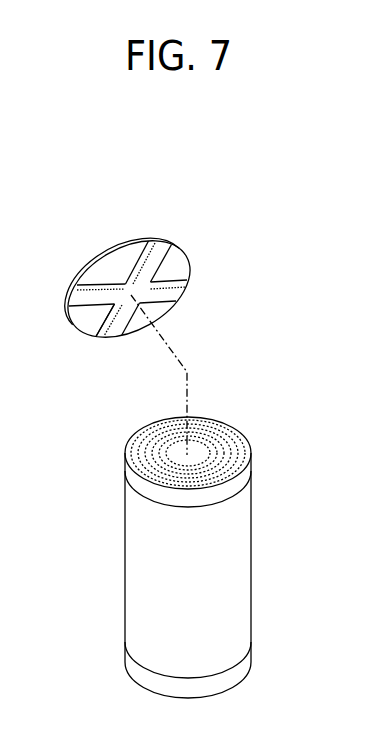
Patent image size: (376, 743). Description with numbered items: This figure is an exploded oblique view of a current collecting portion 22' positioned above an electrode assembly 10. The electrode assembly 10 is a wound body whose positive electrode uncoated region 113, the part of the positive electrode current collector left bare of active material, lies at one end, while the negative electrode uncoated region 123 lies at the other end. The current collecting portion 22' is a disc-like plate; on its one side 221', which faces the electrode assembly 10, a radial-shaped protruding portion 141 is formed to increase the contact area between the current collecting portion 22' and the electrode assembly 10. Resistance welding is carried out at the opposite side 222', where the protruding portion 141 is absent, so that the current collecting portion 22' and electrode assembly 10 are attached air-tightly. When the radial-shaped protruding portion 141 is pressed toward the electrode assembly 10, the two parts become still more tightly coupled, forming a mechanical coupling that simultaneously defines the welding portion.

The electrode assembly 10 is at (222, 557).
The positive electrode uncoated region 113 is at (240, 482).
The negative electrode uncoated region 123 is at (244, 671).
The current collecting portion 22' is at (118, 286).
The opposite side of current collecting portion 222' is at (109, 269).
The one side of current collecting portion 221' is at (76, 350).
The radial-shaped protruding portion 141 is at (110, 334).